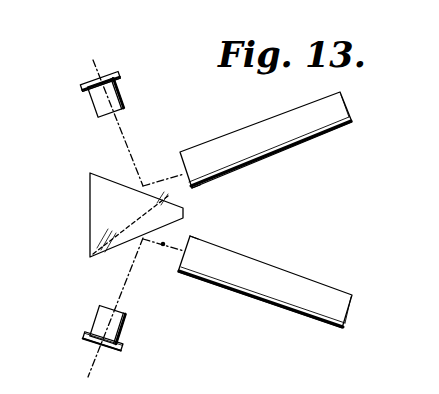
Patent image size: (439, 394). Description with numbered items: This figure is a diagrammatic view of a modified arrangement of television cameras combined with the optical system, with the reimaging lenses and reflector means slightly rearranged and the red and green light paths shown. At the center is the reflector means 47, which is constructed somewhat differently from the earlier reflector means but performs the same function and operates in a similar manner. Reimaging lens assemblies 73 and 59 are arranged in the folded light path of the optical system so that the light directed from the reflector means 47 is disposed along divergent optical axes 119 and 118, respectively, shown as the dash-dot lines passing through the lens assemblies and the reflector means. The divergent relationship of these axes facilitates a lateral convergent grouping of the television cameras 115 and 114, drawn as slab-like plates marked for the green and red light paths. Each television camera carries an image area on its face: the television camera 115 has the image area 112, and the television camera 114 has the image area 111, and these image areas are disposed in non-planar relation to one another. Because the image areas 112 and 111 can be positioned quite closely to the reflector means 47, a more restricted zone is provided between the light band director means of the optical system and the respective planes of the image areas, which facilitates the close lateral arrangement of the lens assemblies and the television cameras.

The reflector means 47 is at (90, 200).
The reimaging lens assembly 73 is at (122, 93).
The reimaging lens assembly 59 is at (121, 330).
The optical axis 119 is at (167, 179).
The optical axis 118 is at (163, 245).
The television camera 115 is at (310, 148).
The image area 112 is at (186, 186).
The television camera 114 is at (277, 303).
The image area 111 is at (187, 242).